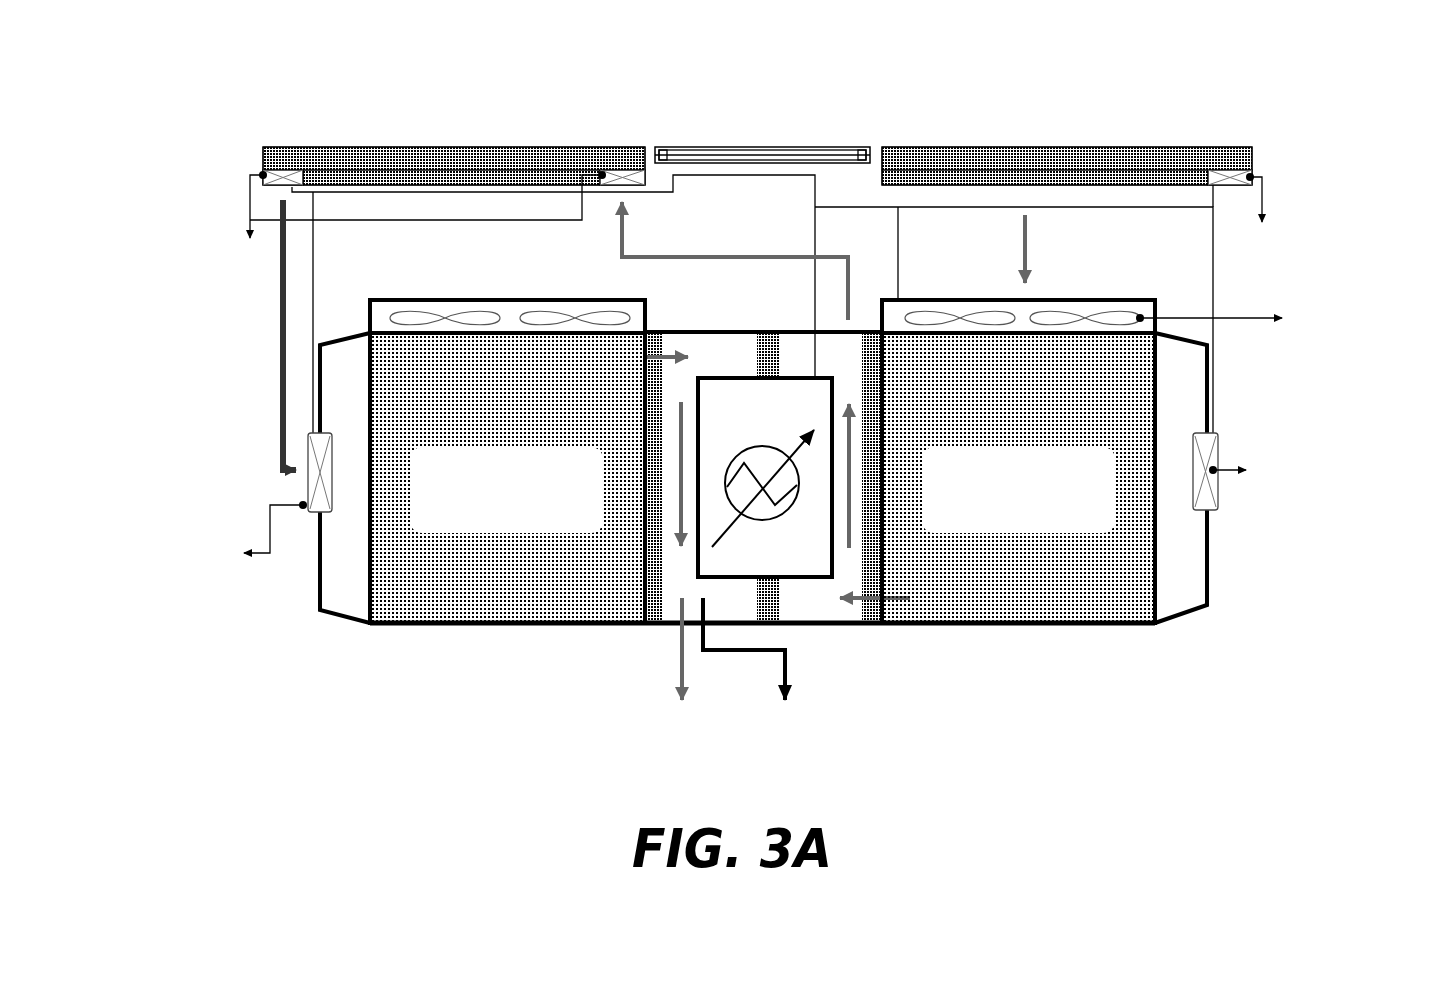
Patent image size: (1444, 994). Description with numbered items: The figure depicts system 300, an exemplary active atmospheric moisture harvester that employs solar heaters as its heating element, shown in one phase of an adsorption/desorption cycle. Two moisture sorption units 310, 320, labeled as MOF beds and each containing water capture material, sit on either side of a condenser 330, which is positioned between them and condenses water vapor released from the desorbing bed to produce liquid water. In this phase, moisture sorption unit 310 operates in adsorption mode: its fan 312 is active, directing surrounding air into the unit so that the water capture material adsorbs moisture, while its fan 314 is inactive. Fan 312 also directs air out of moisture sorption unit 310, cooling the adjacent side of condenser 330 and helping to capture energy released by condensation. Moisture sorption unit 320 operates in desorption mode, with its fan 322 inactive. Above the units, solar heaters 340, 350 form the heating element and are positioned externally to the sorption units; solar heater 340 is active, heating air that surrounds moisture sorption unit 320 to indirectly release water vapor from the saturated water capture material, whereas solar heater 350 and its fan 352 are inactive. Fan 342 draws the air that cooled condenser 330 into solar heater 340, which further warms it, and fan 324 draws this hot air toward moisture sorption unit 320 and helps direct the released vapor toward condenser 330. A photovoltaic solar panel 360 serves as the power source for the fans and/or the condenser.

The system 300 is at (386, 48).
The moisture sorption unit 310 is at (1018, 478).
The fan 312 is at (1128, 336).
The fan 314 is at (1262, 486).
The moisture sorption unit 320 is at (507, 478).
The fan 322 is at (507, 289).
The fan 324 is at (250, 524).
The condenser 330 is at (765, 477).
The solar heater 340 is at (356, 169).
The fan 342 is at (400, 236).
The solar heater 350 is at (1161, 169).
The fan 352 is at (1291, 225).
The photovoltaic solar panel 360 is at (762, 95).